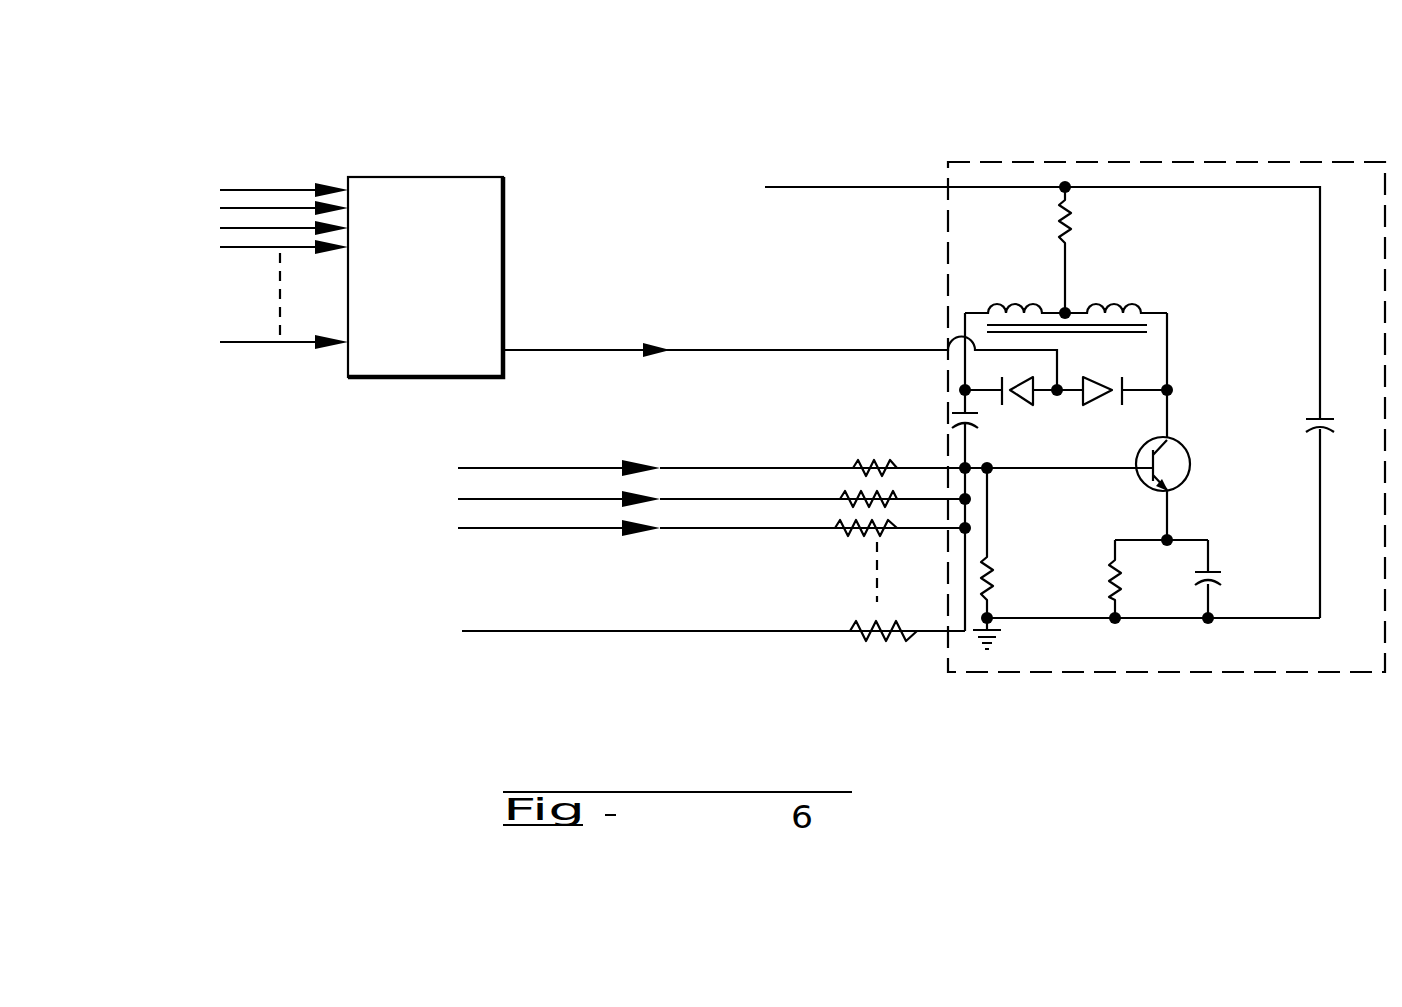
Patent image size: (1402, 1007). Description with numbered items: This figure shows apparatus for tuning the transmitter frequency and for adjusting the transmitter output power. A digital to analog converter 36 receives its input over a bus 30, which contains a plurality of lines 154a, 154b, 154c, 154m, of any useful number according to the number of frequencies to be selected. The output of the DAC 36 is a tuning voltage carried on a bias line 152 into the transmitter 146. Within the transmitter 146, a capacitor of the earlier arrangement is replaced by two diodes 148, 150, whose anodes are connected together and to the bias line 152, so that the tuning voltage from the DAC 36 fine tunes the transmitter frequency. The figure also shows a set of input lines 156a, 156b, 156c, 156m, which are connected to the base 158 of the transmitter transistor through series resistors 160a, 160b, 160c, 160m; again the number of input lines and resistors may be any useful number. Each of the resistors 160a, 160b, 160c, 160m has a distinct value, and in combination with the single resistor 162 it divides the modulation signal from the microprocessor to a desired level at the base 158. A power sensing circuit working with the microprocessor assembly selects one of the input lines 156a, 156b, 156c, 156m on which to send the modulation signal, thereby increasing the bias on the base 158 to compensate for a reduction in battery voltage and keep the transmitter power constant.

The bus 30 is at (246, 148).
The digital to analog converter 36 is at (505, 200).
The transmitter 146 is at (1038, 370).
The diode 148 is at (1018, 405).
The diode 150 is at (1090, 407).
The bias line 152 is at (578, 349).
The line 154a is at (220, 190).
The line 154b is at (220, 208).
The line 154c is at (220, 228).
The line 154m is at (220, 342).
The input line 156a is at (470, 470).
The input line 156b is at (465, 499).
The input line 156c is at (460, 528).
The input line 156m is at (477, 632).
The base 158 is at (1123, 467).
The series resistor 160a is at (878, 460).
The series resistor 160b is at (842, 485).
The series resistor 160c is at (848, 537).
The series resistor 160m is at (863, 640).
The single resistor 162 is at (993, 582).